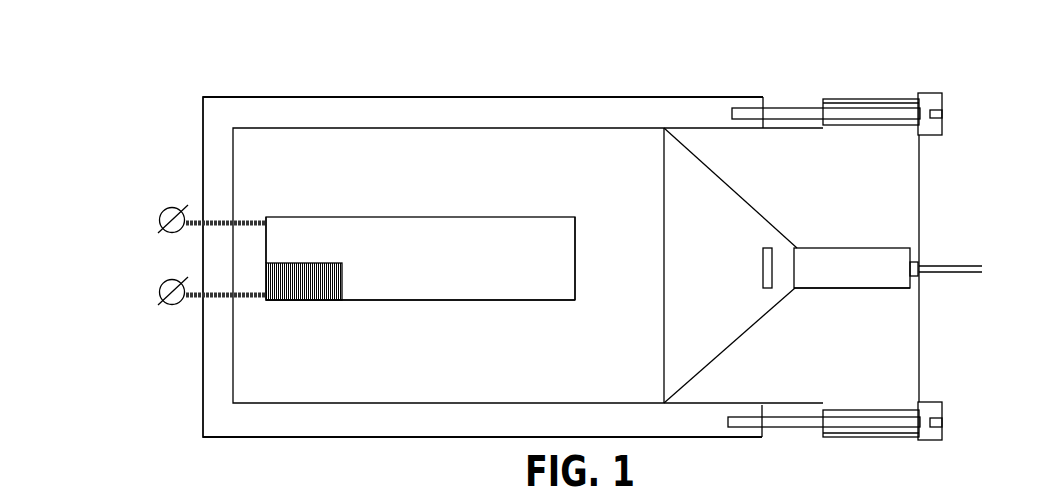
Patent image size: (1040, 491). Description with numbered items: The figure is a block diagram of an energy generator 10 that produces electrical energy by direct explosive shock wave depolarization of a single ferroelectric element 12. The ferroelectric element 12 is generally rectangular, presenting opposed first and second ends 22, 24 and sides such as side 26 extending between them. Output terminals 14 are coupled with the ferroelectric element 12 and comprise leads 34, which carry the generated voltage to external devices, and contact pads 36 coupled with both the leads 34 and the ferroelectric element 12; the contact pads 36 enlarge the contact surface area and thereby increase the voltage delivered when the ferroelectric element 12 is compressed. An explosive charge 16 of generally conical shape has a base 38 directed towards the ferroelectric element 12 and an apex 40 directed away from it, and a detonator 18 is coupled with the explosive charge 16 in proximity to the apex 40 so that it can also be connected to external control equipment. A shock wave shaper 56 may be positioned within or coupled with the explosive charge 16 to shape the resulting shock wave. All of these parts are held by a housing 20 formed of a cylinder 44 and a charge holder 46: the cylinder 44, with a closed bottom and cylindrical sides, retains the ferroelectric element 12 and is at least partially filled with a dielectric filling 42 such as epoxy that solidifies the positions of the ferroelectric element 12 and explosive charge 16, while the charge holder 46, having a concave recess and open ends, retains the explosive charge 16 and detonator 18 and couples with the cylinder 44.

The energy generator 10 is at (219, 73).
The ferroelectric element 12 is at (525, 223).
The output terminals 14 is at (183, 318).
The explosive charge 16 is at (740, 195).
The detonator 18 is at (892, 262).
The housing 20 is at (537, 112).
The first end 22 is at (263, 242).
The second end 24 is at (585, 302).
The side 26 is at (431, 302).
The leads 34 is at (158, 220).
The contact pads 36 is at (312, 302).
The base 38 is at (663, 345).
The apex 40 is at (795, 290).
The dielectric filling 42 is at (472, 370).
The cylinder 44 is at (382, 112).
The charge holder 46 is at (908, 168).
The shock wave shaper 56 is at (776, 245).